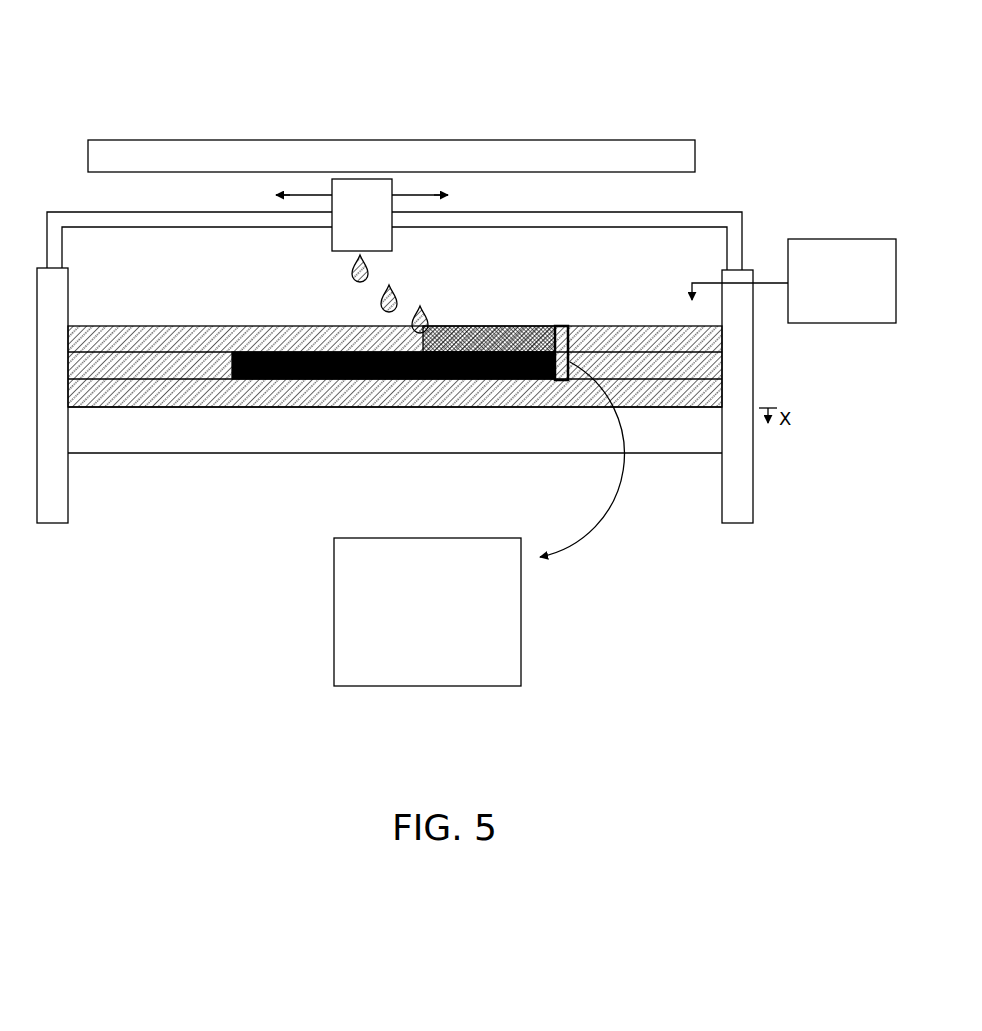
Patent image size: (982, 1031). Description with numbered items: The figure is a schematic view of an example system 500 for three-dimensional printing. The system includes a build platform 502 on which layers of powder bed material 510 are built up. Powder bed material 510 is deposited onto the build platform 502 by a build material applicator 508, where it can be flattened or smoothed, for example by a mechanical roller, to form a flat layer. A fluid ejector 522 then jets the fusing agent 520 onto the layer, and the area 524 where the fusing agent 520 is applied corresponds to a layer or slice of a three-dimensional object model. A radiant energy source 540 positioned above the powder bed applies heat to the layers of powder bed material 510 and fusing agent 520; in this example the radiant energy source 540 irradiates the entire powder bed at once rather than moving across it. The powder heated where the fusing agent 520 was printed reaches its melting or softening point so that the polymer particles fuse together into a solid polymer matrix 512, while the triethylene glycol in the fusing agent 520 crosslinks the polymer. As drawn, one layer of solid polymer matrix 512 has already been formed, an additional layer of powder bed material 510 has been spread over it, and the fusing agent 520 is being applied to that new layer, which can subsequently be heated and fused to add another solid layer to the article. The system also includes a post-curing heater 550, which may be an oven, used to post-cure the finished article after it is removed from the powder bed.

The system for three-dimensional printing 500 is at (131, 53).
The build platform 502 is at (560, 417).
The build material applicator 508 is at (821, 295).
The powder bed material 510 is at (135, 358).
The solid polymer matrix 512 is at (357, 379).
The fusing agent 520 is at (352, 269).
The fluid ejector 522 is at (341, 227).
The area where fusing agent is applied 524 is at (465, 372).
The radiant energy source 540 is at (371, 168).
The post-curing heater 550 is at (406, 625).